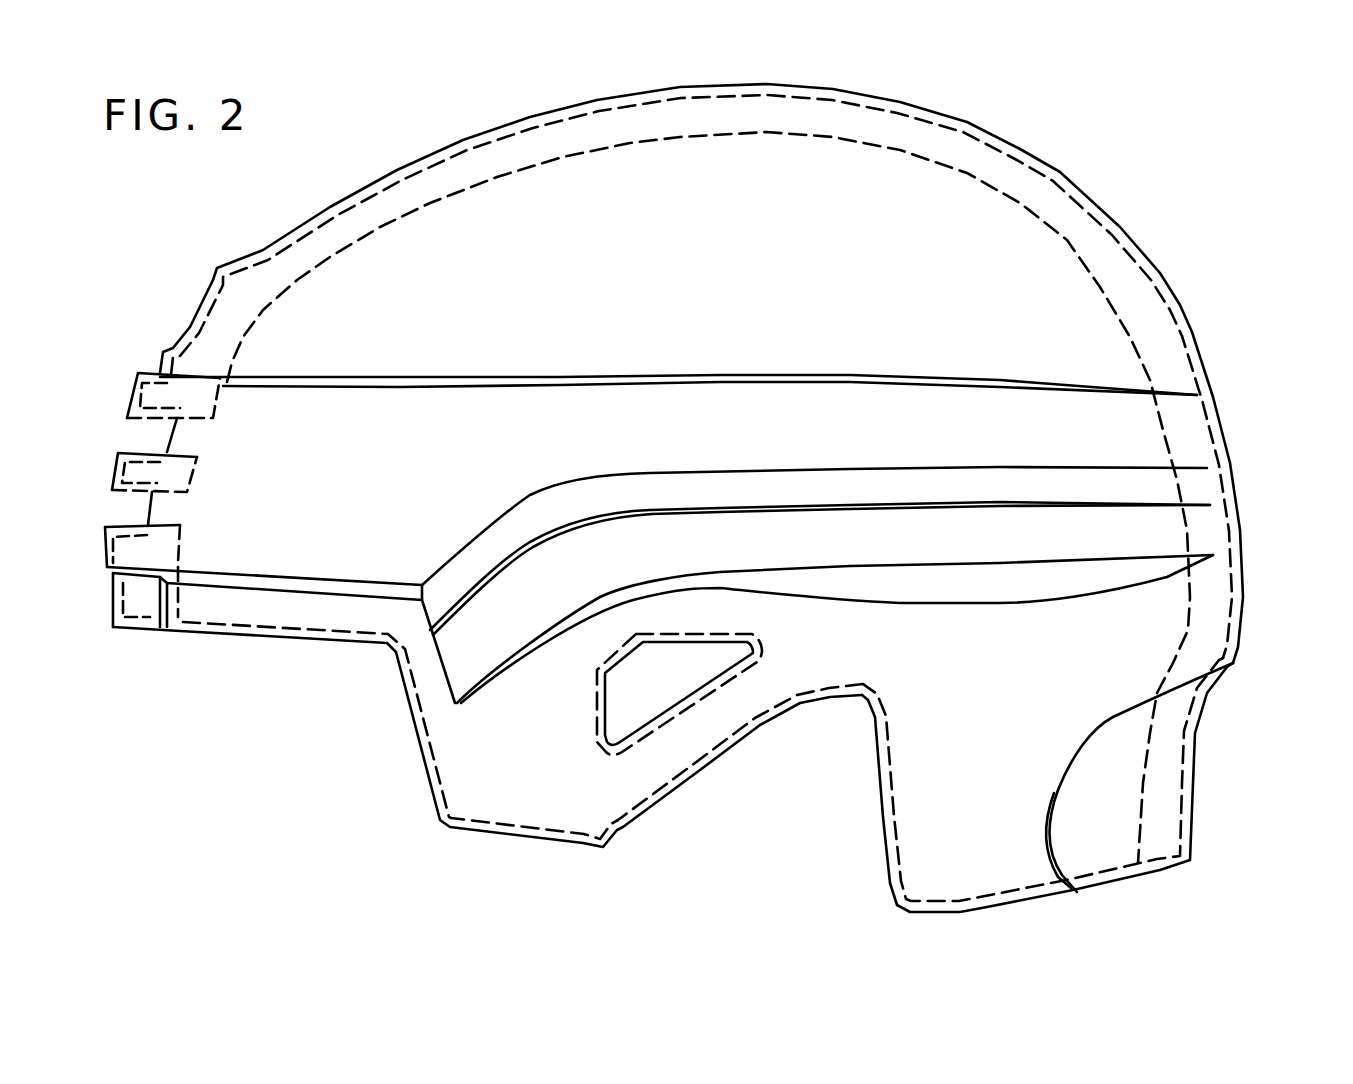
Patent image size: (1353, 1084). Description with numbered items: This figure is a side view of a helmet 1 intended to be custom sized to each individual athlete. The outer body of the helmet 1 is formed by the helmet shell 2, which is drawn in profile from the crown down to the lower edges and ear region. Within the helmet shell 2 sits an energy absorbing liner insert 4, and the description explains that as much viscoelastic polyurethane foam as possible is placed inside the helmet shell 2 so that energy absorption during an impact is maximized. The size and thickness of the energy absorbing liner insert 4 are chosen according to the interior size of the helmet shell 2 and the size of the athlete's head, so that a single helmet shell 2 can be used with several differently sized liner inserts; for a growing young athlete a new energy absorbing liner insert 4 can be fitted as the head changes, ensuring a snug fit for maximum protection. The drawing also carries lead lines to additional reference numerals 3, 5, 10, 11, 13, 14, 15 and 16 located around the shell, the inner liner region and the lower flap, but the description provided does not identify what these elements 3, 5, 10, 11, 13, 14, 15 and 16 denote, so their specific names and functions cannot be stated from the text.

The helmet 1 is at (1103, 163).
The helmet shell 2 is at (1123, 223).
The rear edge of ear flap 3 is at (1182, 828).
The energy absorbing liner insert 4 is at (987, 900).
The inner shell layer 5 is at (1157, 280).
The aperture 10 is at (686, 735).
The lower opening 11 is at (475, 760).
The fastening tabs 13 is at (262, 425).
The upper band 14 is at (1118, 438).
The lower band 15 is at (1128, 542).
The middle band 16 is at (1135, 486).